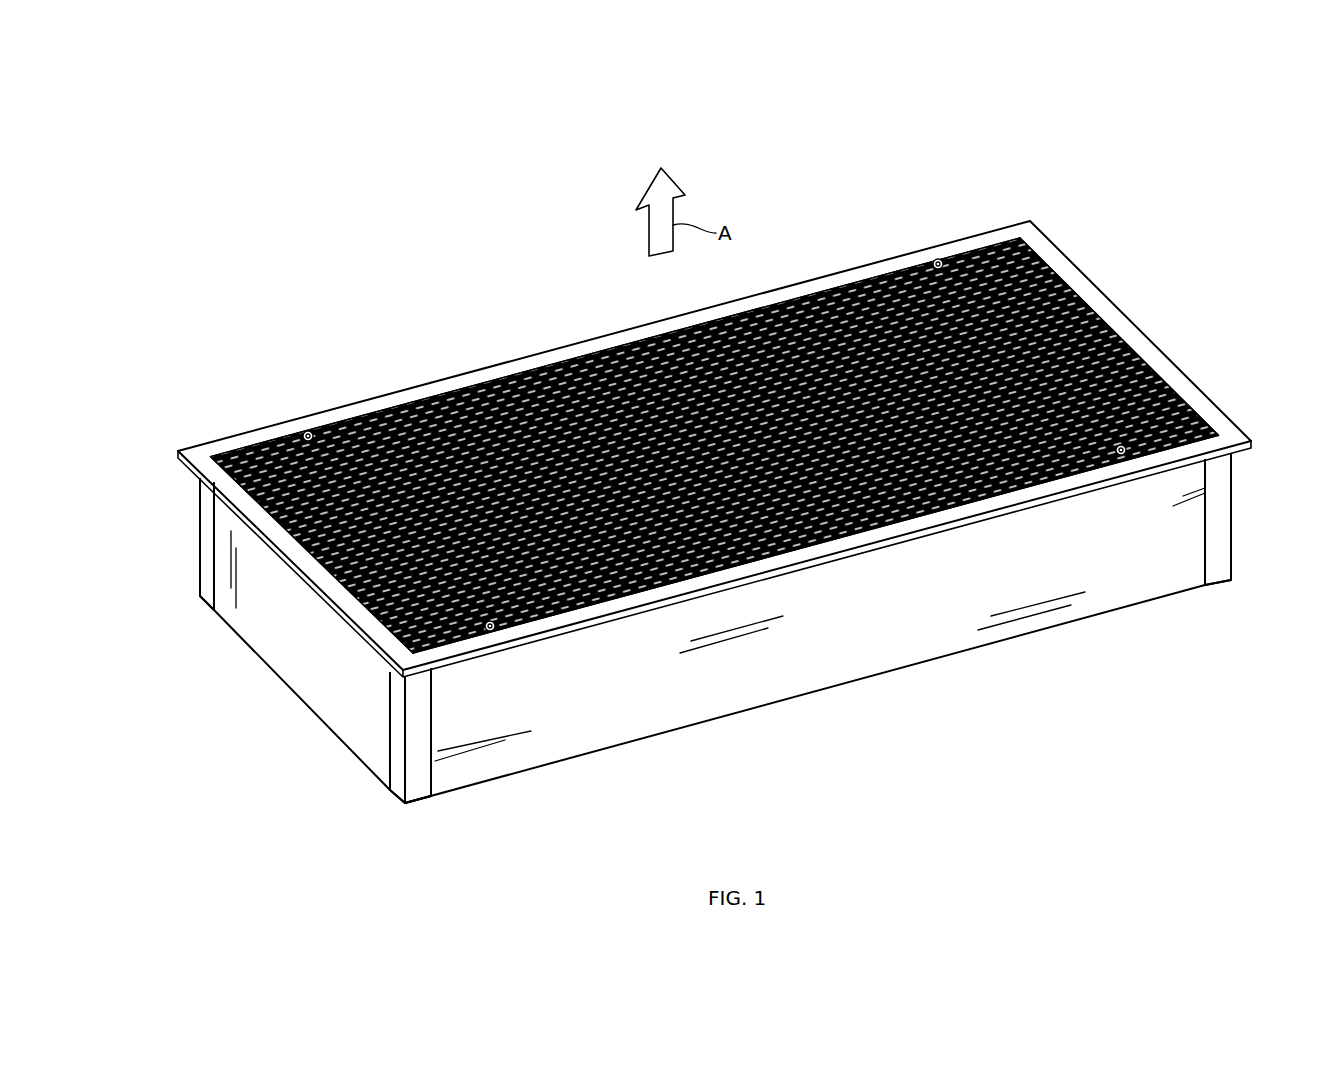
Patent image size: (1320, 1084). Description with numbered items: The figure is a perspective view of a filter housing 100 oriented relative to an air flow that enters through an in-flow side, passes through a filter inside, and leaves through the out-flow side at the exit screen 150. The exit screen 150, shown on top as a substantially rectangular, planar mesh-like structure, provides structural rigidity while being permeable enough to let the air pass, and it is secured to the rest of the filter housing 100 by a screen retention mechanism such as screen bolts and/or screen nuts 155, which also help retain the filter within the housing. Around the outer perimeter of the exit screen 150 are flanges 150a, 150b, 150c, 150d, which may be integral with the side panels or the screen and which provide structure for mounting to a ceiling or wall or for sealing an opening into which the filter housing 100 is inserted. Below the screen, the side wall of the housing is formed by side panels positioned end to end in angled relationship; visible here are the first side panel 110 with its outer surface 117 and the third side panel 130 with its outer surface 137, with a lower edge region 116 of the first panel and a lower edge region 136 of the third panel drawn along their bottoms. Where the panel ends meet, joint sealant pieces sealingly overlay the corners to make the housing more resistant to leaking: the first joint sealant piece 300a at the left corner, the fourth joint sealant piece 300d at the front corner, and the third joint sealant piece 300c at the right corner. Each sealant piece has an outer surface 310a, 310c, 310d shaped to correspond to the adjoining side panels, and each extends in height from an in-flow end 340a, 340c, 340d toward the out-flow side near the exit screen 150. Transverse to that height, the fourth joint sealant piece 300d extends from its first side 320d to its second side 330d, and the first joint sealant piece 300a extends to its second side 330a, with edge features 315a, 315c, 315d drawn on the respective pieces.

The filter housing 100 is at (1123, 207).
The first side panel 110 is at (258, 628).
The bottom edge of side wall 116 is at (275, 667).
The outer surface 117 is at (310, 647).
The third side panel 130 is at (800, 660).
The bottom edge of front panel 136 is at (687, 717).
The outer surface 137 is at (925, 596).
The exit screen 150 is at (493, 367).
The flange 150a is at (610, 330).
The flange 150b is at (1115, 320).
The flange 150c is at (550, 612).
The flange 150d is at (253, 507).
The screen bolts and/or screen nuts 155 is at (930, 251).
The first joint sealant piece 300a is at (197, 493).
The third joint sealant piece 300c is at (1210, 530).
The fourth joint sealant piece 300d is at (410, 702).
The outer surface 310a is at (198, 560).
The outer surface 310c is at (1195, 540).
The outer surface 310d is at (390, 692).
The post outer edge 315a is at (190, 540).
The post outer edge 315c is at (1223, 485).
The post outer edge 315d is at (403, 788).
The first side 320d is at (382, 683).
The second side 330a is at (217, 578).
The second side 330d is at (425, 758).
The in-flow end 340a is at (198, 592).
The in-flow end 340c is at (1223, 573).
The in-flow end 340d is at (395, 787).